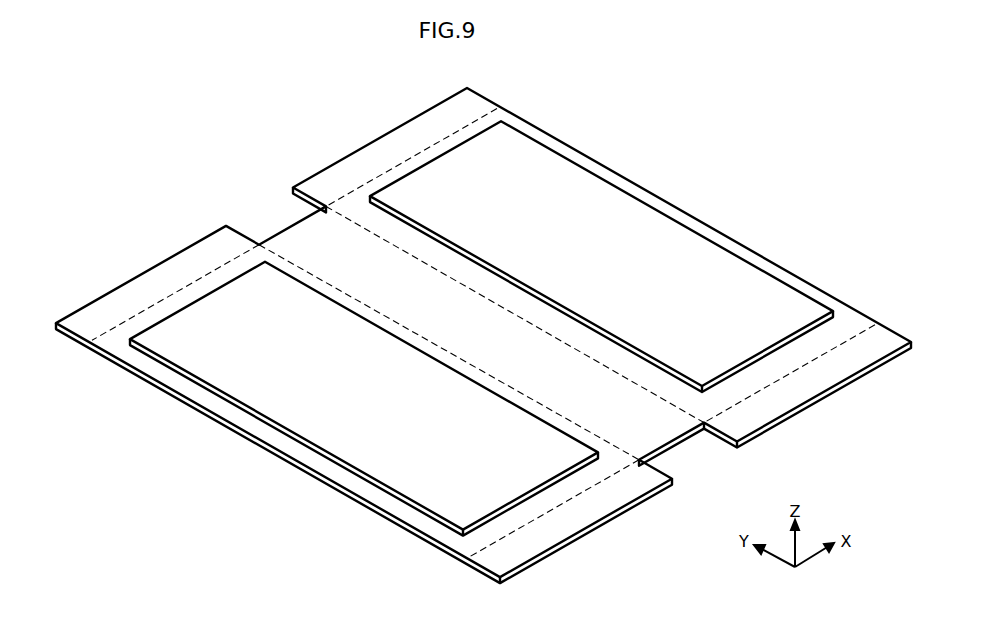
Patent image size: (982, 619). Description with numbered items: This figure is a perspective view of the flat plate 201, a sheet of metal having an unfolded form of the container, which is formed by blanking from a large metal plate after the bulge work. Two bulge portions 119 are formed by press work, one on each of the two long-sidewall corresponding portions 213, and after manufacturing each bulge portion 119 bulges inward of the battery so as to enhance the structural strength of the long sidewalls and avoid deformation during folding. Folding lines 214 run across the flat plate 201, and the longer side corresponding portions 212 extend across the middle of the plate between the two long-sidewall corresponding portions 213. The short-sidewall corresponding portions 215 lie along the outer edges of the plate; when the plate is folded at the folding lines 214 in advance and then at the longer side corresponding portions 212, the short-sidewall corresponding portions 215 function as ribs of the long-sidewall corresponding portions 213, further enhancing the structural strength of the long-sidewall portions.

The flat plate 201 is at (592, 168).
The bulge portion 119 is at (555, 267).
The longer side corresponding portion 212 is at (502, 307).
The long-sidewall corresponding portion 213 is at (695, 217).
The folding line 214 is at (408, 157).
The short-sidewall corresponding portion 215 is at (377, 140).